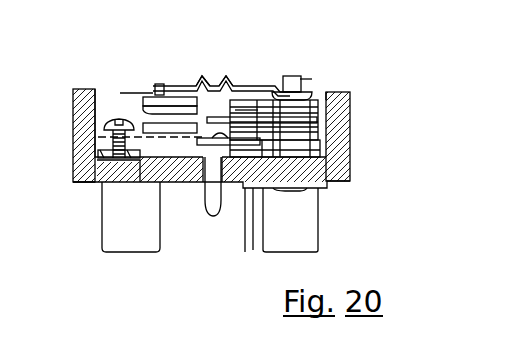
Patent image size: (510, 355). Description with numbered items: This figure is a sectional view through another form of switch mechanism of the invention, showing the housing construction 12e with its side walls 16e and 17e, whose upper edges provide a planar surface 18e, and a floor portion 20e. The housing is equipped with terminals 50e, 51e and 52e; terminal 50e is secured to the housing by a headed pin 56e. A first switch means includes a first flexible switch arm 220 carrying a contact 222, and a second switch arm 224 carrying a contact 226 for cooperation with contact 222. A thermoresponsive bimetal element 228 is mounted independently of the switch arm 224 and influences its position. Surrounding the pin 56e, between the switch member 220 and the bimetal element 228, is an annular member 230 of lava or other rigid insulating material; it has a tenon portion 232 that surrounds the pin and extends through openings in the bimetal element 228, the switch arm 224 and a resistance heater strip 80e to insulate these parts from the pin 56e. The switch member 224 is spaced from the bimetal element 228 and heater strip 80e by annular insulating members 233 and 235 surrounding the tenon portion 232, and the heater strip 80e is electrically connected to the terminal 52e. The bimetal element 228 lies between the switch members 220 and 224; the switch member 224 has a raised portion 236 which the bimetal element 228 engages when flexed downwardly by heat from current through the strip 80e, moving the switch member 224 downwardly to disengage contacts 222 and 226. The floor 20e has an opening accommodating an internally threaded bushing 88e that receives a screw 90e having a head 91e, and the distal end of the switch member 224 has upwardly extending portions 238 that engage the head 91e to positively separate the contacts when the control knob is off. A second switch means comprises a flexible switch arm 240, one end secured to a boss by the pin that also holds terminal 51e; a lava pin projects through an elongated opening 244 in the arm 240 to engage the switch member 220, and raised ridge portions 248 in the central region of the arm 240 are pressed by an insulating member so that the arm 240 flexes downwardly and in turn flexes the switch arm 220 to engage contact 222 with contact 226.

The side wall 17e is at (73, 89).
The head 91e is at (75, 107).
The planar surface 18e is at (343, 90).
The side wall 16e is at (350, 98).
The floor portion 20e is at (140, 188).
The housing construction 12e is at (72, 187).
The terminal 52e is at (103, 248).
The terminal 50e is at (240, 251).
The terminal 51e is at (317, 247).
The upwardly extending portions 238 is at (108, 132).
The screw 90e is at (98, 151).
The bushing 88e is at (97, 175).
The contact 222 is at (150, 120).
The contact 226 is at (147, 122).
The second switch arm 224 is at (216, 213).
The resistance heater element 80e is at (208, 190).
The elongated opening 244 is at (215, 76).
The raised ridge portions 248 is at (228, 78).
The flexible switch arm 240 is at (196, 82).
The first flexible switch arm 220 is at (178, 87).
The raised portion 236 is at (250, 88).
The bimetal element 228 is at (228, 128).
The headed pin 56e is at (300, 79).
The annular member 230 is at (335, 105).
The annular insulating member 233 is at (327, 132).
The tenon portion 232 is at (337, 143).
The annular insulating member 235 is at (317, 152).